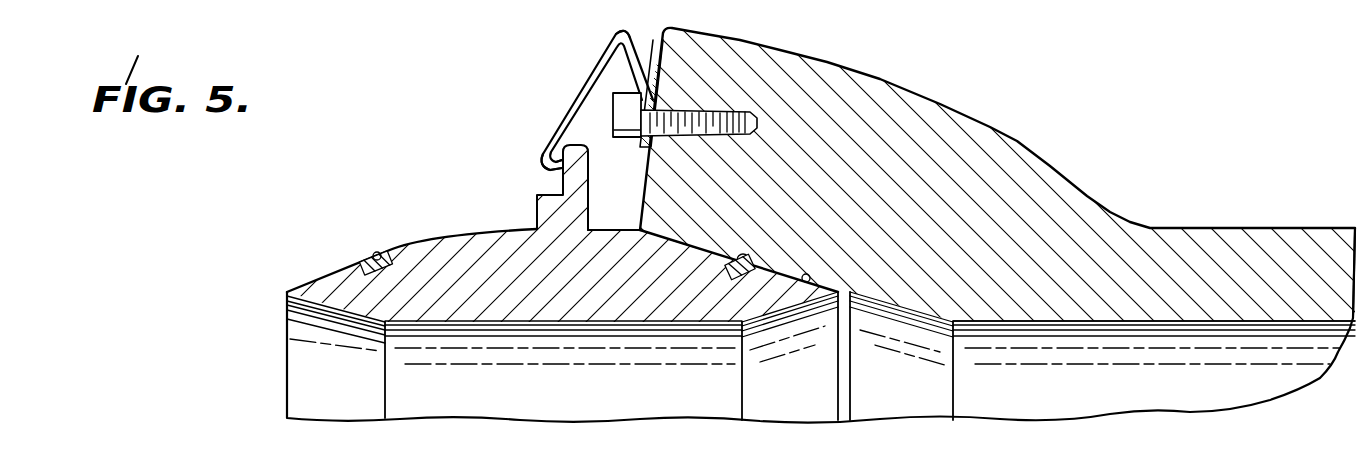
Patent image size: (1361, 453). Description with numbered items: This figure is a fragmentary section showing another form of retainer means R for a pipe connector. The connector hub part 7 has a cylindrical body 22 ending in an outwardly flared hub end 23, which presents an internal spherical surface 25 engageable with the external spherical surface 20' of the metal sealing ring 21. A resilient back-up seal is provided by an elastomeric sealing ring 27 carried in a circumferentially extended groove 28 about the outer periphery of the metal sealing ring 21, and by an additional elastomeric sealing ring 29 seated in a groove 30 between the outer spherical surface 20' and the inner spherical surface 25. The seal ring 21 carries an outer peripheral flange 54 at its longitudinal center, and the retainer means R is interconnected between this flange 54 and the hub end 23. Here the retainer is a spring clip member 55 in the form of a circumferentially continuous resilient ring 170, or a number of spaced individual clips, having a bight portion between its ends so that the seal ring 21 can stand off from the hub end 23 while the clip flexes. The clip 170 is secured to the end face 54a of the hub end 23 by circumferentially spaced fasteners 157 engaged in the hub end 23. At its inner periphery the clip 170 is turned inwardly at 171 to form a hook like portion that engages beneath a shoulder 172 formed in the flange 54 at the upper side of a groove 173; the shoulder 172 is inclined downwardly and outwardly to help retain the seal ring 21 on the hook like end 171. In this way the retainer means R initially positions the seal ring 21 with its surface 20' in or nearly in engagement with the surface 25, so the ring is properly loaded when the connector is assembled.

The connector hub part 7 is at (1320, 228).
The external spherical surface 20' is at (670, 264).
The metal sealing ring 21 is at (796, 252).
The cylindrical body 22 is at (1243, 237).
The hub end 23 is at (870, 88).
The internal spherical surface 25 is at (810, 274).
The elastomeric sealing ring 27 is at (376, 256).
The groove 28 is at (372, 252).
The additional elastomeric sealing ring 29 is at (745, 256).
The groove 30 is at (735, 270).
The outer peripheral flange 54 is at (548, 215).
The end face 54a is at (654, 40).
The spring clip member 55 is at (586, 70).
The fasteners 157 is at (686, 140).
The resilient ring 170 is at (626, 30).
The hook like portion 171 is at (554, 170).
The shoulder 172 is at (568, 173).
The groove 173 is at (546, 174).
The retainer means R is at (552, 103).